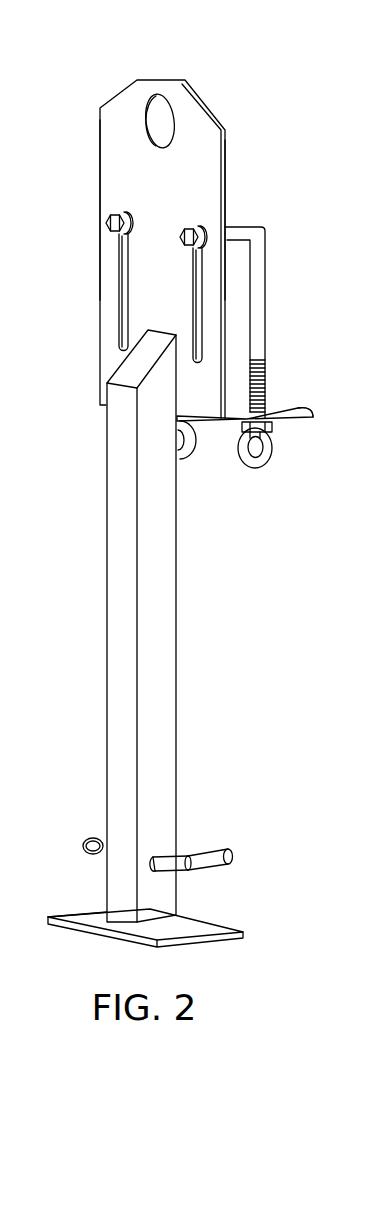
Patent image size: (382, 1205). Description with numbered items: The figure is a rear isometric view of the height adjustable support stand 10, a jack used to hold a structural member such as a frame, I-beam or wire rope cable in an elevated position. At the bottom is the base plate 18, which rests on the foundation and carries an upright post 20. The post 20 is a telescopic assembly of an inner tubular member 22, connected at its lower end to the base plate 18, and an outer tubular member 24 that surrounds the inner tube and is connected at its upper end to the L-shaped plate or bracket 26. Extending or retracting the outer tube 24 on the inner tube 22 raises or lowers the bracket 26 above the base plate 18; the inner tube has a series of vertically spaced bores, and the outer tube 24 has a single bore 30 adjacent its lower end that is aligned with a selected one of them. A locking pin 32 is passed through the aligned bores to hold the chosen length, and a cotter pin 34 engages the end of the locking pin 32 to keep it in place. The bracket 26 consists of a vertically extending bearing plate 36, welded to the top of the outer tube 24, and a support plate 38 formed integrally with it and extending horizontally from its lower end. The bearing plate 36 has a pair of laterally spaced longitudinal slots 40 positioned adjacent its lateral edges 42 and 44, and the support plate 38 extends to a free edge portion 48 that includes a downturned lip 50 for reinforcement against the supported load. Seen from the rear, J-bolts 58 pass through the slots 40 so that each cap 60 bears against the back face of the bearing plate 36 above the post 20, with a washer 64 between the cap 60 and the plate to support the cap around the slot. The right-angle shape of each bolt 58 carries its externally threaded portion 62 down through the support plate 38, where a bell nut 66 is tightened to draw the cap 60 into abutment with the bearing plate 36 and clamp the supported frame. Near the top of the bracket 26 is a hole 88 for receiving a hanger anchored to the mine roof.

The support stand 10 is at (255, 125).
The base plate 18 is at (187, 927).
The upright post 20 is at (201, 587).
The inner tubular member 22 is at (98, 917).
The outer tubular member 24 is at (177, 724).
The L-shaped plate or bracket 26 is at (80, 298).
The bore 30 is at (152, 856).
The locking pin 32 is at (200, 852).
The cotter pin 34 is at (90, 838).
The bearing plate 36 is at (108, 331).
The support plate 38 is at (284, 432).
The longitudinal slots 40 is at (119, 262).
The lateral edge 42 is at (226, 160).
The lateral edge 44 is at (100, 128).
The free edge portion 48 is at (290, 410).
The downturned lip 50 is at (313, 418).
The J-bolt 58 is at (258, 290).
The cap 60 is at (106, 223).
The externally threaded portion 62 is at (275, 391).
The washer 64 is at (118, 214).
The bell nut 66 is at (191, 455).
The hole 88 is at (148, 107).